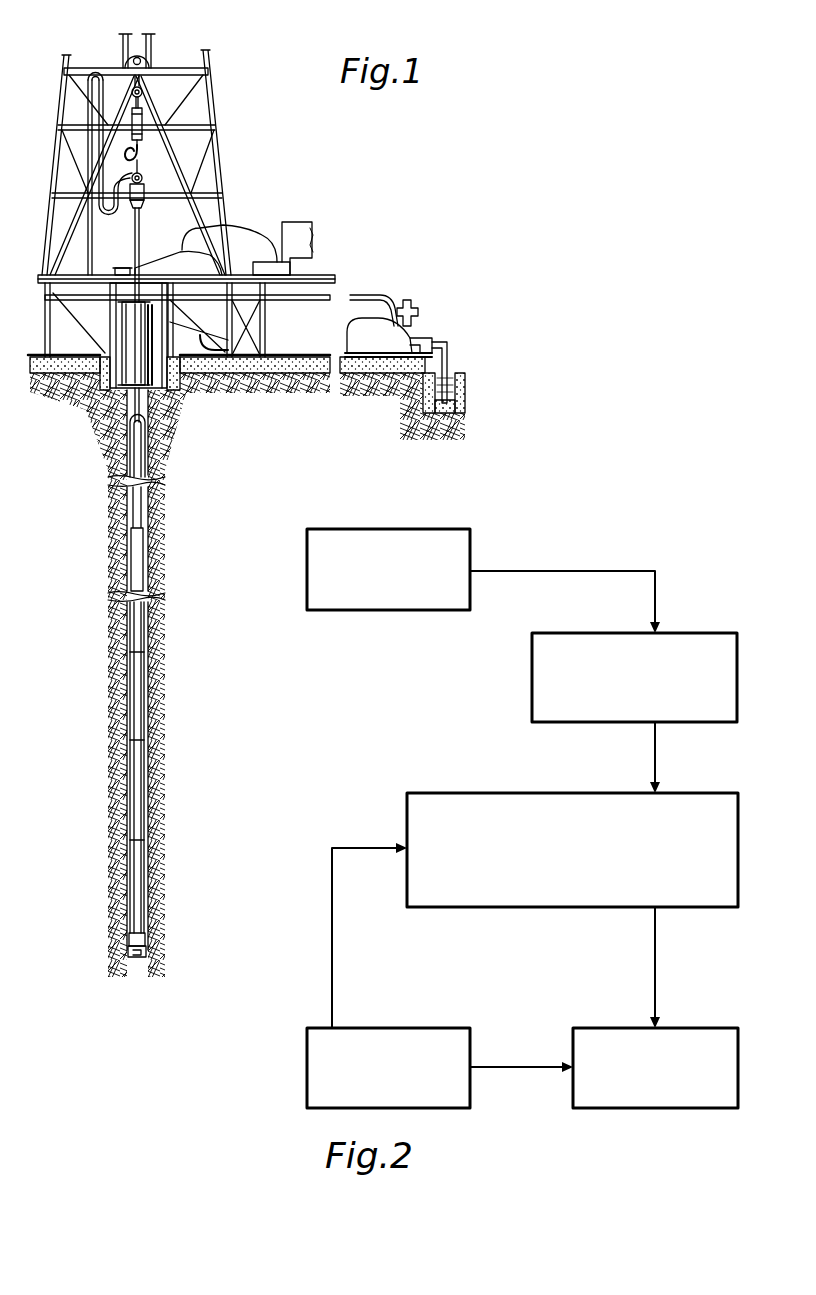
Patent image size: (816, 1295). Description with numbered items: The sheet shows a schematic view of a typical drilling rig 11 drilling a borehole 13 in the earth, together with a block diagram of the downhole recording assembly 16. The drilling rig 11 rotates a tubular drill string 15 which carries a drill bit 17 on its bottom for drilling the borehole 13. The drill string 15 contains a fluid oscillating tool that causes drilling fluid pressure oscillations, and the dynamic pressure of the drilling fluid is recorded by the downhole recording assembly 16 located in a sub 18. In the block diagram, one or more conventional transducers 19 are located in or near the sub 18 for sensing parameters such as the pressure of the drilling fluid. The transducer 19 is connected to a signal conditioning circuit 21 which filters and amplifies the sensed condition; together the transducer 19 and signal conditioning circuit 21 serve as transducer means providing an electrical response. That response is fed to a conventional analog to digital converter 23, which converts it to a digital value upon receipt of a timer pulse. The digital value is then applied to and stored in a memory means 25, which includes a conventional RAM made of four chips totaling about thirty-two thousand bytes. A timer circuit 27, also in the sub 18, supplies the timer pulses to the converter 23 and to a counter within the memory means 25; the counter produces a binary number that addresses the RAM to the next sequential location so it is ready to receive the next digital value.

In FIG. 1, the drilling rig 11 is at (306, 160).
In FIG. 1, the borehole 13 is at (147, 513).
In FIG. 1, the drill string 15 is at (140, 626).
In FIG. 2, the downhole recording assembly 16 is at (441, 744).
In FIG. 1, the drill bit 17 is at (146, 951).
In FIG. 1, the sub 18 is at (130, 940).
In FIG. 2, the transducer 19 is at (416, 529).
In FIG. 2, the signal conditioning circuit 21 is at (615, 633).
In FIG. 2, the analog to digital converter 23 is at (507, 793).
In FIG. 2, the memory means 25 is at (623, 1028).
In FIG. 2, the timer circuit 27 is at (441, 1028).